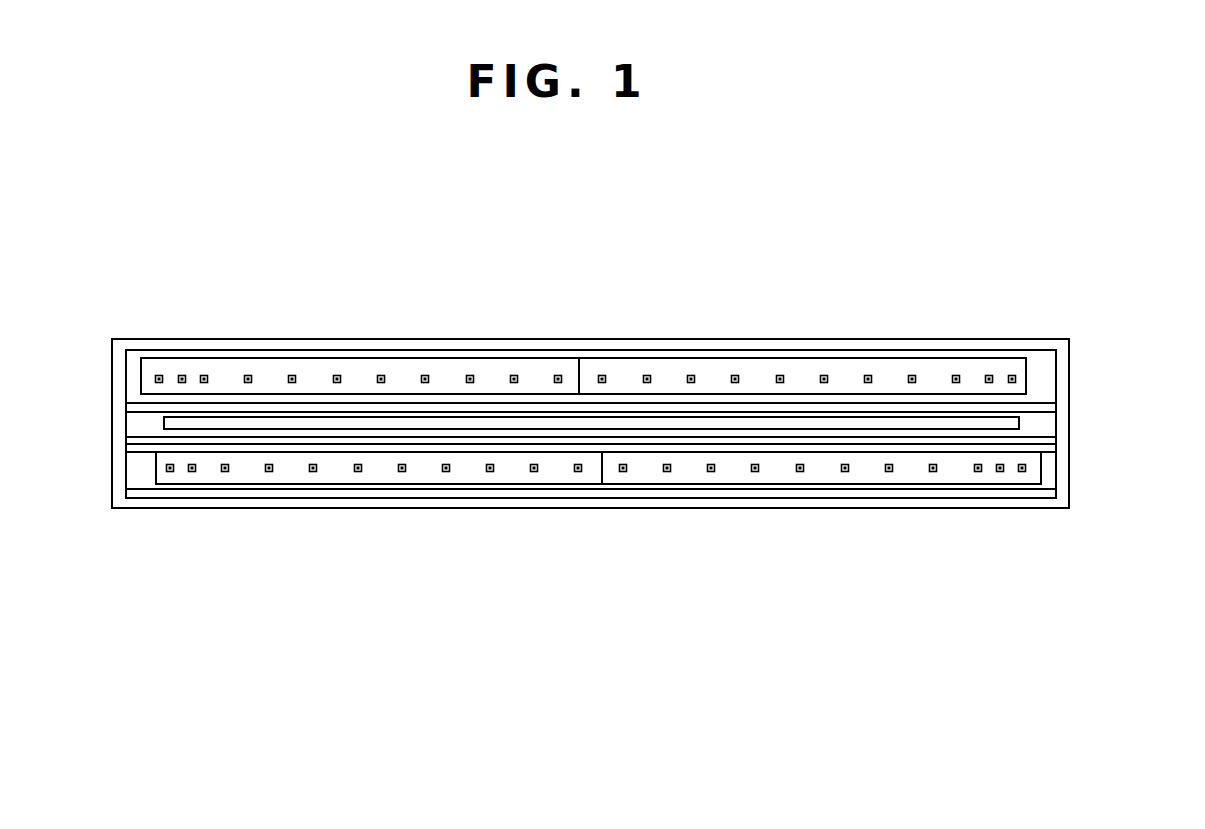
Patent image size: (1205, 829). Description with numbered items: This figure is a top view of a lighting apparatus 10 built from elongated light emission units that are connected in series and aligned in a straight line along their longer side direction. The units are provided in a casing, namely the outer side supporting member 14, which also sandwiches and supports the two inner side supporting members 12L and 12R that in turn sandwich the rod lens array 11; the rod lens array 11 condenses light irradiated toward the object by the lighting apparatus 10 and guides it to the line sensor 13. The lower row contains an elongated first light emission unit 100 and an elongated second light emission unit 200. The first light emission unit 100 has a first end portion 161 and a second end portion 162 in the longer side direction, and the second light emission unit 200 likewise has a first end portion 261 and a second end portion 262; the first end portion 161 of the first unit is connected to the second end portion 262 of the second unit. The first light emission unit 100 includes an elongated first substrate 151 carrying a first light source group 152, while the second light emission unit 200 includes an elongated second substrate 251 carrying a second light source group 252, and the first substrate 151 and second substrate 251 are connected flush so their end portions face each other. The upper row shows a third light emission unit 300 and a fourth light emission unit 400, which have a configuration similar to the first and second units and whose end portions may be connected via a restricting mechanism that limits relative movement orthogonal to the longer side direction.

The lighting apparatus 10 is at (1006, 277).
The outer side supporting member 14 is at (850, 350).
The inner side supporting member 12R is at (126, 403).
The inner side supporting member 12L is at (126, 443).
The rod lens array 11 is at (163, 419).
The line sensor 13 is at (591, 423).
The fourth light emission unit 400 is at (397, 358).
The third light emission unit 300 is at (772, 358).
The second light emission unit 200 is at (278, 490).
The first light emission unit 100 is at (695, 490).
The first end portion 161 is at (603, 478).
The first end portion 261 is at (155, 471).
The second end portion 162 is at (1042, 477).
The second substrate 251 is at (208, 474).
The second light source group 252 is at (357, 474).
The second end portion 262 is at (595, 472).
The first light source group 152 is at (889, 474).
The first substrate 151 is at (915, 474).